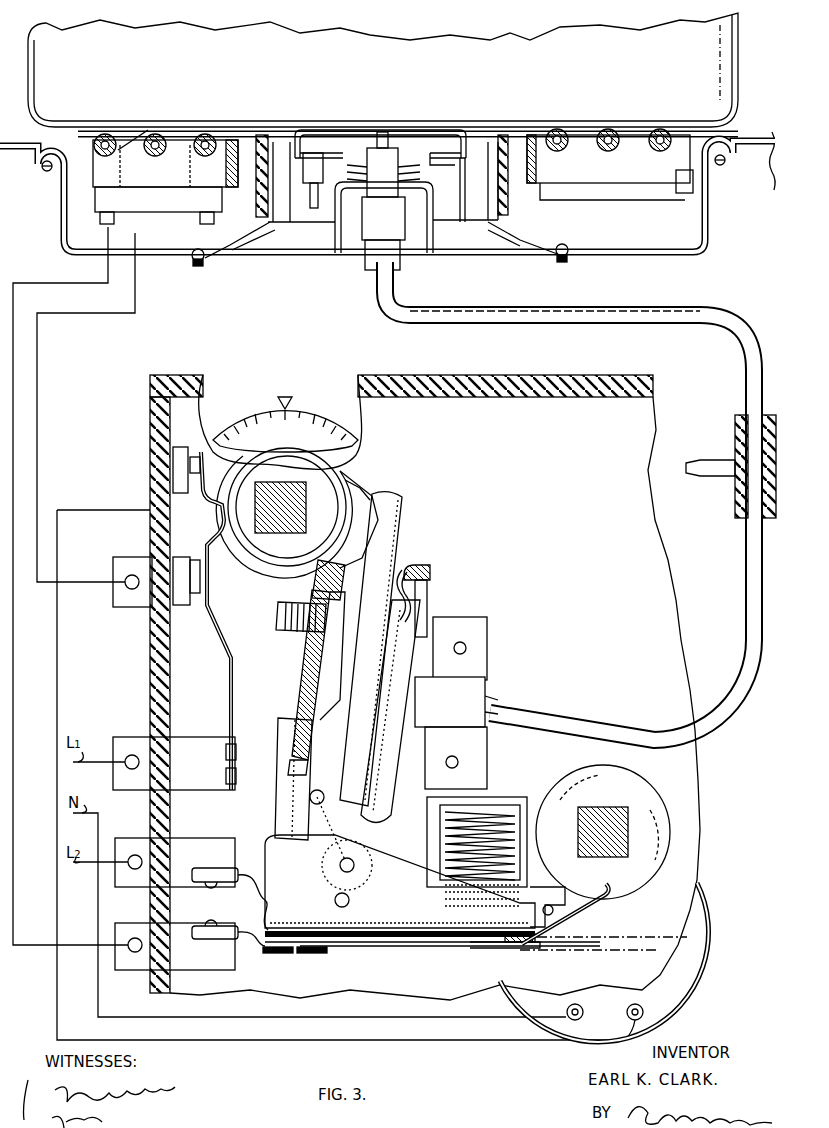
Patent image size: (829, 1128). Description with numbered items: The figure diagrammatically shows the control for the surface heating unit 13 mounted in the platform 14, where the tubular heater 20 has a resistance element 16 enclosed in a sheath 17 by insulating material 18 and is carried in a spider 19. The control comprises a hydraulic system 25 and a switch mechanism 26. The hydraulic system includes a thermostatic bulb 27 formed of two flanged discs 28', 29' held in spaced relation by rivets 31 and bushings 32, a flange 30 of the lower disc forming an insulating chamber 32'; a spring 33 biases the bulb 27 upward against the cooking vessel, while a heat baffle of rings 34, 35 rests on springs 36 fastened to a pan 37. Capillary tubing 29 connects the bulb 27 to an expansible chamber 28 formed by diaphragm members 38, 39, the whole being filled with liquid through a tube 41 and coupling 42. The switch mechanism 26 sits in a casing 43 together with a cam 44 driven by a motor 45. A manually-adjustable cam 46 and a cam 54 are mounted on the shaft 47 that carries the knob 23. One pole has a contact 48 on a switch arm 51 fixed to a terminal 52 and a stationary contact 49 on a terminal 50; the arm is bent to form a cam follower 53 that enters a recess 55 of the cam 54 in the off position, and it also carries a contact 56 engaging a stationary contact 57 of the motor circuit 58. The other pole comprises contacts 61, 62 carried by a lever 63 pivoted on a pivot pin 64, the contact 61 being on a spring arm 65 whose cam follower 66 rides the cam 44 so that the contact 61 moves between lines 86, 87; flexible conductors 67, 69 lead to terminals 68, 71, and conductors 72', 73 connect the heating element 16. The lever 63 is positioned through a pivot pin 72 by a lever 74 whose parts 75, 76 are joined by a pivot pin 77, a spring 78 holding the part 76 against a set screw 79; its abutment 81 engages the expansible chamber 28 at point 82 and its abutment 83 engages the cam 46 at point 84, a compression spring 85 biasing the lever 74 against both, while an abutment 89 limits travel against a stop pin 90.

The surface heating unit 13 is at (757, 216).
The platform 14 is at (752, 140).
The resistance element 16 is at (155, 134).
The tube or sheath 17 is at (106, 134).
The insulating material 18 is at (210, 134).
The spider 19 is at (130, 196).
The tubular heater 20 is at (152, 158).
The knob 23 is at (324, 425).
The thermal or hydraulic system 25 is at (535, 668).
The switch mechanism 26 is at (282, 660).
The thermostatic bulb 27 is at (445, 130).
The expansible chamber 28 is at (431, 561).
The flanged disc 28' is at (380, 126).
The capillary tubing 29 is at (569, 501).
The flanged disc 29' is at (311, 151).
The flange 30 is at (456, 134).
The rivets 31 is at (425, 150).
The bushings 32 is at (389, 145).
The insulating chamber 32' is at (472, 190).
The spring 33 is at (420, 188).
The ring 34 is at (284, 206).
The ring 35 is at (256, 190).
The springs 36 is at (556, 246).
The pan 37 is at (650, 255).
The diaphragm member 38 is at (430, 606).
The diaphragm member 39 is at (402, 570).
The tube 41 is at (708, 460).
The coupling 42 is at (736, 508).
The casing 43 is at (466, 378).
The cam 44 is at (645, 795).
The motor 45 is at (708, 953).
The manually-adjustable cam 46 is at (338, 470).
The shaft 47 is at (270, 530).
The contact 48 is at (200, 600).
The stationary contact 49 is at (182, 557).
The terminal 50 is at (134, 606).
The switch arm 51 is at (230, 678).
The terminal 52 is at (192, 745).
The cam follower 53 is at (220, 510).
The cam 54 is at (250, 540).
The recess 55 is at (232, 486).
The contact 56 is at (196, 455).
The stationary contact 57 is at (180, 456).
The circuit 58 is at (95, 510).
The contact 61 is at (520, 949).
The contact 62 is at (478, 946).
The lever 63 is at (406, 883).
The pivot pin 64 is at (335, 900).
The spring arm 65 is at (426, 950).
The cam follower 66 is at (598, 905).
The flexible conductor 67 is at (246, 906).
The terminal 68 is at (202, 845).
The flexible conductor 69 is at (248, 950).
The terminal 71 is at (224, 960).
The pivot pin 72 is at (313, 861).
The conductor 72' is at (86, 414).
The conductor 73 is at (40, 283).
The lever 74 is at (404, 508).
The part 75 is at (298, 720).
The part 76 is at (315, 682).
The pivot pin 77 is at (310, 797).
The spring 78 is at (334, 588).
The set screw 79 is at (278, 612).
The abutment 81 is at (372, 720).
The point 82 is at (378, 680).
The abutment 83 is at (388, 492).
The point 84 is at (352, 496).
The compression spring 85 is at (488, 815).
The line 86 is at (540, 890).
The line 87 is at (590, 953).
The abutment 89 is at (550, 907).
The stop pin 90 is at (552, 906).